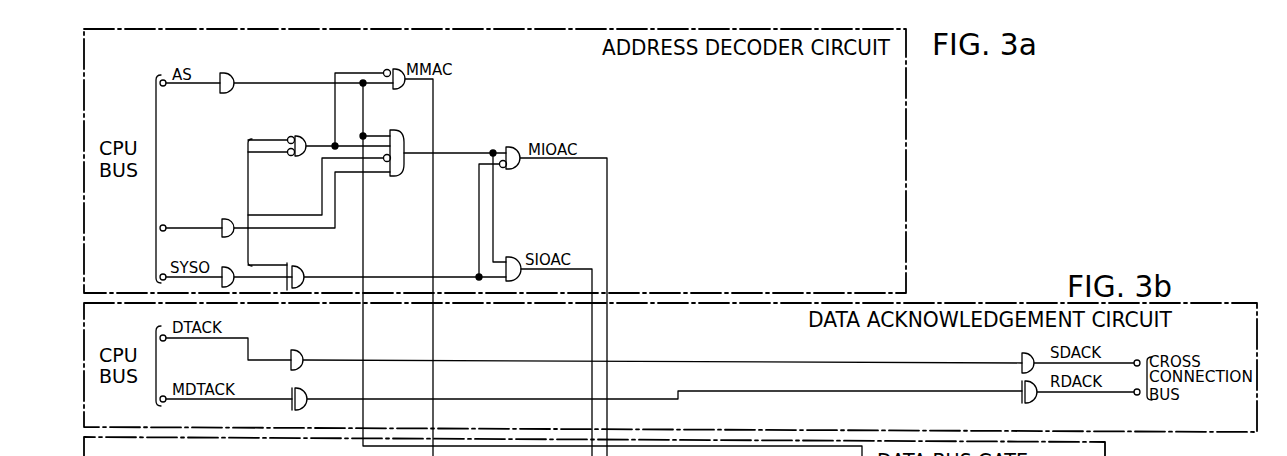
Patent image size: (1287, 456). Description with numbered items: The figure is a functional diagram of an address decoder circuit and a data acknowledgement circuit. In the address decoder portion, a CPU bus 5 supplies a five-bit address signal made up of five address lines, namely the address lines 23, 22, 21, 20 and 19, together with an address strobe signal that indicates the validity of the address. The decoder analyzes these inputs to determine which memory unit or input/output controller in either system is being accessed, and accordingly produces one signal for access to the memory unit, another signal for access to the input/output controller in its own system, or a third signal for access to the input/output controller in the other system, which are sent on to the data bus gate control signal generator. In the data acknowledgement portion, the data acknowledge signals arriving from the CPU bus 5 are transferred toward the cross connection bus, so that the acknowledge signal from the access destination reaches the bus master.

The five-line address bus A19-A23 5 is at (216, 221).
The address line A19 19 is at (267, 258).
The address line A20 20 is at (319, 210).
The address line A21 21 is at (319, 186).
The address line A22 22 is at (271, 162).
The address line A23 23 is at (271, 133).